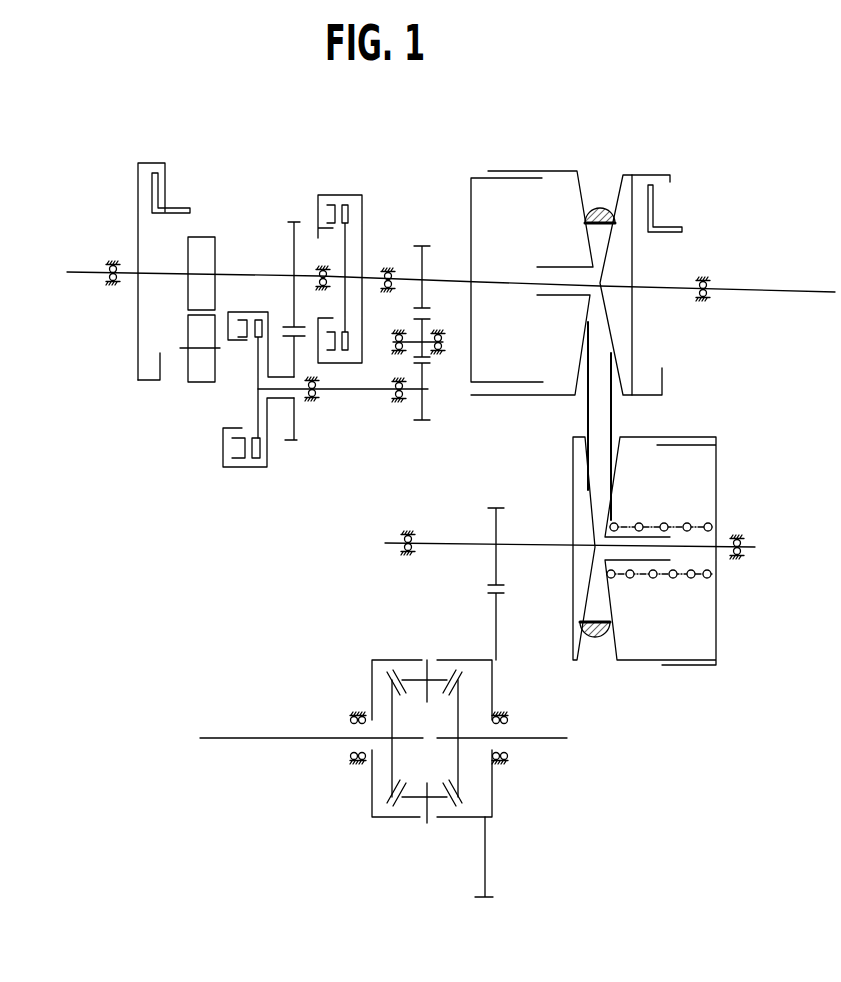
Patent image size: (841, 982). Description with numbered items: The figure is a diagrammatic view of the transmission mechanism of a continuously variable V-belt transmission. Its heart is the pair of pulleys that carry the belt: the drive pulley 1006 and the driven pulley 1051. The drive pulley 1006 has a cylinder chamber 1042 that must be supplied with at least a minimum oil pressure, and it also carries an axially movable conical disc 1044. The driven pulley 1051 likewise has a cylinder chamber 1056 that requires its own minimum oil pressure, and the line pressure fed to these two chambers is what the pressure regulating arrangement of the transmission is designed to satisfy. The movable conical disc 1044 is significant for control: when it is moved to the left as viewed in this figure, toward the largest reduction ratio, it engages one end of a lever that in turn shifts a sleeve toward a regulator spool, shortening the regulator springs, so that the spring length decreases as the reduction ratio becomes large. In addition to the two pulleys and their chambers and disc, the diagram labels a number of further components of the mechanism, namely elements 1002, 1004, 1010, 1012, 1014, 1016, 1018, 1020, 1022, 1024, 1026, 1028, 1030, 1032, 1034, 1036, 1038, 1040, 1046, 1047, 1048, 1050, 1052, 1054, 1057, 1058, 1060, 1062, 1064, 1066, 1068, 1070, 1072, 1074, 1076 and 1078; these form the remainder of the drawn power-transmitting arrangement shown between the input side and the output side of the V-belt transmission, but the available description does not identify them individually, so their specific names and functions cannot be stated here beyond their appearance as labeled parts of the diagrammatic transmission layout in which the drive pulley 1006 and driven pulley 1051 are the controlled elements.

The bearing 1002 is at (100, 274).
The clutch 1004 is at (348, 193).
The drive pulley 1006 is at (593, 152).
The input gear unit 1010 is at (180, 294).
The gear 1012 is at (212, 248).
The gear 1014 is at (207, 376).
The housing 1016 is at (136, 340).
The housing portion 1018 is at (145, 378).
The bracket 1020 is at (160, 193).
The countershaft 1022 is at (378, 394).
The clutch 1024 is at (245, 480).
The gear 1026 is at (293, 248).
The gear 1028 is at (290, 424).
The gear 1030 is at (423, 267).
The idler shaft 1032 is at (422, 296).
The gear 1034 is at (422, 405).
The clutch plates 1036 is at (318, 212).
The clutch plates 1038 is at (223, 448).
The sheave 1040 is at (617, 176).
The cylinder chamber 1042 is at (510, 190).
The axially movable conical disc 1044 is at (577, 171).
The housing 1046 is at (670, 175).
The housing portion 1047 is at (650, 383).
The bracket 1048 is at (653, 205).
The belt 1050 is at (612, 425).
The driven pulley 1051 is at (593, 653).
The bearing 1052 is at (452, 548).
The sheave 1054 is at (570, 625).
The cylinder chamber 1056 is at (620, 663).
The balls 1057 is at (673, 578).
The belt portion 1058 is at (653, 656).
The gear 1060 is at (500, 507).
The gear 1062 is at (494, 613).
The differential case 1064 is at (375, 658).
The pinion shaft 1066 is at (415, 680).
The bevel gears 1068 is at (410, 800).
The differential 1070 is at (368, 672).
The side gear 1072 is at (390, 763).
The side gear 1074 is at (458, 776).
The axle shaft 1076 is at (285, 739).
The axle shaft 1078 is at (560, 739).